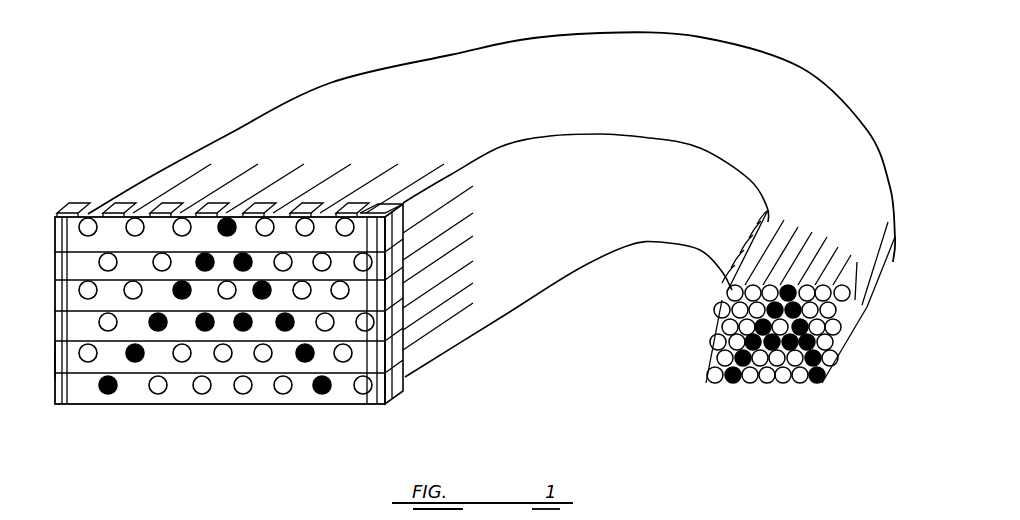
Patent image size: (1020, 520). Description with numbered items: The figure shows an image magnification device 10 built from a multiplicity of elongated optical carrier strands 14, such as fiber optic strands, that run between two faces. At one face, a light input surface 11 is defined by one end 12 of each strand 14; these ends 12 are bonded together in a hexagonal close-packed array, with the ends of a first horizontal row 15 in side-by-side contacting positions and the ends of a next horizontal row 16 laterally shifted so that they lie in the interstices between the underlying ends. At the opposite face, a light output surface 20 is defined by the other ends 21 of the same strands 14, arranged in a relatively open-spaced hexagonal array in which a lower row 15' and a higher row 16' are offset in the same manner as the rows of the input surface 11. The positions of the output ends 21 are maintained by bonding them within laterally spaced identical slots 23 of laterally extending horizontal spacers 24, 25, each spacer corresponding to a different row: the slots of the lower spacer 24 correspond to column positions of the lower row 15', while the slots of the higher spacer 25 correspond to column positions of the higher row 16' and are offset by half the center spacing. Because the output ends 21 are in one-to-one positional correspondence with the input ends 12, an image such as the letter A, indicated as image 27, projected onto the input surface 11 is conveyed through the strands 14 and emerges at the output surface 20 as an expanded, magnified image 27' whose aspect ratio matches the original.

The image magnification device 10 is at (324, 80).
The light input surface 11 is at (776, 330).
The end 12 is at (723, 329).
The elongated optical carrier strands 14 is at (866, 255).
The first horizontal row 15 is at (705, 393).
The next horizontal row 16 is at (695, 369).
The lower row 15' is at (73, 394).
The higher row 16' is at (67, 412).
The light output surface 20 is at (250, 409).
The other ends 21 is at (134, 225).
The slots 23 is at (118, 392).
The lower spacer 24 is at (405, 262).
The higher spacer 25 is at (405, 233).
The image 27 is at (844, 393).
The magnified image 27' is at (313, 406).